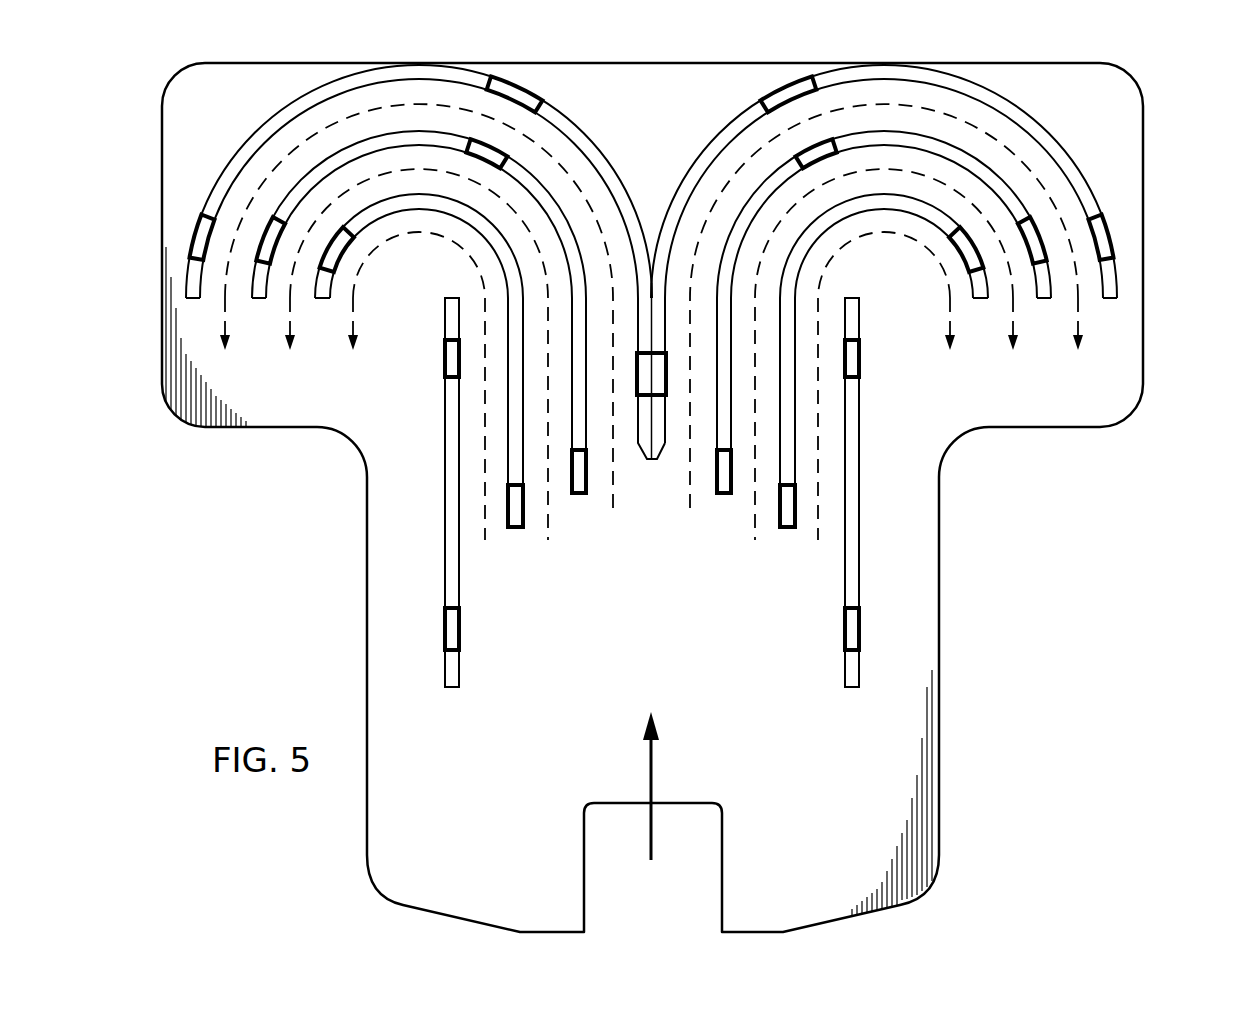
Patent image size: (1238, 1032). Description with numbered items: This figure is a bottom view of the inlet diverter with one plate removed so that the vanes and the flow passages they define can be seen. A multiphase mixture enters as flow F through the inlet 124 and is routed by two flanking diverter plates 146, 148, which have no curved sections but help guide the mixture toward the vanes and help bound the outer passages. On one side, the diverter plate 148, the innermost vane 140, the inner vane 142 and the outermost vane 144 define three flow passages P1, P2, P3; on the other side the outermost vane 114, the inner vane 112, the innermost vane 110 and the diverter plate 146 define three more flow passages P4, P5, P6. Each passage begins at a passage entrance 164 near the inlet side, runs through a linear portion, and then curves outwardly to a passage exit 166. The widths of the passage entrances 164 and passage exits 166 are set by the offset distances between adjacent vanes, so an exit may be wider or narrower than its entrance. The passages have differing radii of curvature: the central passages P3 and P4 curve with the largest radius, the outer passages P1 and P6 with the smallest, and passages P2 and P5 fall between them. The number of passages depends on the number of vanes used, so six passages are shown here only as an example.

The innermost vane 110 is at (960, 234).
The inner vane 112 is at (985, 176).
The outermost vane 114 is at (957, 84).
The inlet 124 is at (541, 692).
The innermost vane 140 is at (343, 234).
The inner vane 142 is at (318, 176).
The outermost vane 144 is at (346, 84).
The diverter plate 146 is at (858, 437).
The diverter plate 148 is at (445, 437).
The passage entrance 164 is at (499, 534).
The passage exit 166 is at (207, 308).
The flow passage P1 is at (482, 560).
The flow passage P2 is at (547, 560).
The flow passage P3 is at (612, 528).
The flow passage P4 is at (690, 528).
The flow passage P5 is at (755, 560).
The flow passage P6 is at (819, 560).
The flow F is at (656, 768).